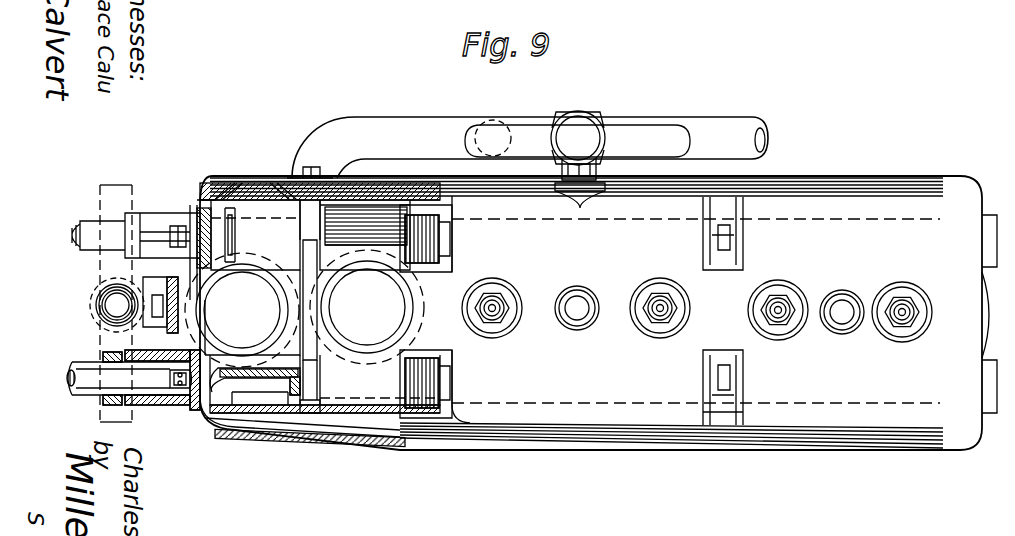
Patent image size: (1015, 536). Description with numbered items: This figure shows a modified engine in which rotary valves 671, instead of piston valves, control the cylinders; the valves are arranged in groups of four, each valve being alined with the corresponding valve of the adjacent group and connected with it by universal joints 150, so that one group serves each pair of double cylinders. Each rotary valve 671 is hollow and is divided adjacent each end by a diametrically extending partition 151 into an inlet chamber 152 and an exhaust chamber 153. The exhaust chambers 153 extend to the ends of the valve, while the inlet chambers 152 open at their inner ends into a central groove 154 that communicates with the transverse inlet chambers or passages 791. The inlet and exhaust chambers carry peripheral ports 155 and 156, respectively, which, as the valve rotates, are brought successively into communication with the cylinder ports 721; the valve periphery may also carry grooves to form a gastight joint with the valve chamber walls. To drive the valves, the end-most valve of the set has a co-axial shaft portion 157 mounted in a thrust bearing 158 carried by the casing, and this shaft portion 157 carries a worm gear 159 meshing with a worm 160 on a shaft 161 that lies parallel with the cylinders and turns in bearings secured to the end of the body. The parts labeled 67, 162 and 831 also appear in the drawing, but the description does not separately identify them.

The peripheral port 156 is at (388, 205).
The valve rod 67 is at (276, 224).
The cylinder port 721 is at (304, 308).
The inlet chamber 152 is at (262, 366).
The transverse inlet chamber or passage 791 is at (310, 310).
The diametrically extending partition 151 is at (272, 428).
The exhaust chamber 153 is at (258, 430).
The peripheral port 155 is at (283, 412).
The central groove 154 is at (314, 414).
The rotary valve 671 is at (386, 412).
The universal joint 150 is at (446, 248).
The co-axial shaft portion 157 is at (68, 239).
The shaft 161 is at (106, 300).
The worm 160 is at (92, 310).
The bracket 162 is at (170, 333).
The worm gear 159 is at (98, 410).
The thrust bearing 158 is at (172, 405).
The flange 831 is at (181, 405).